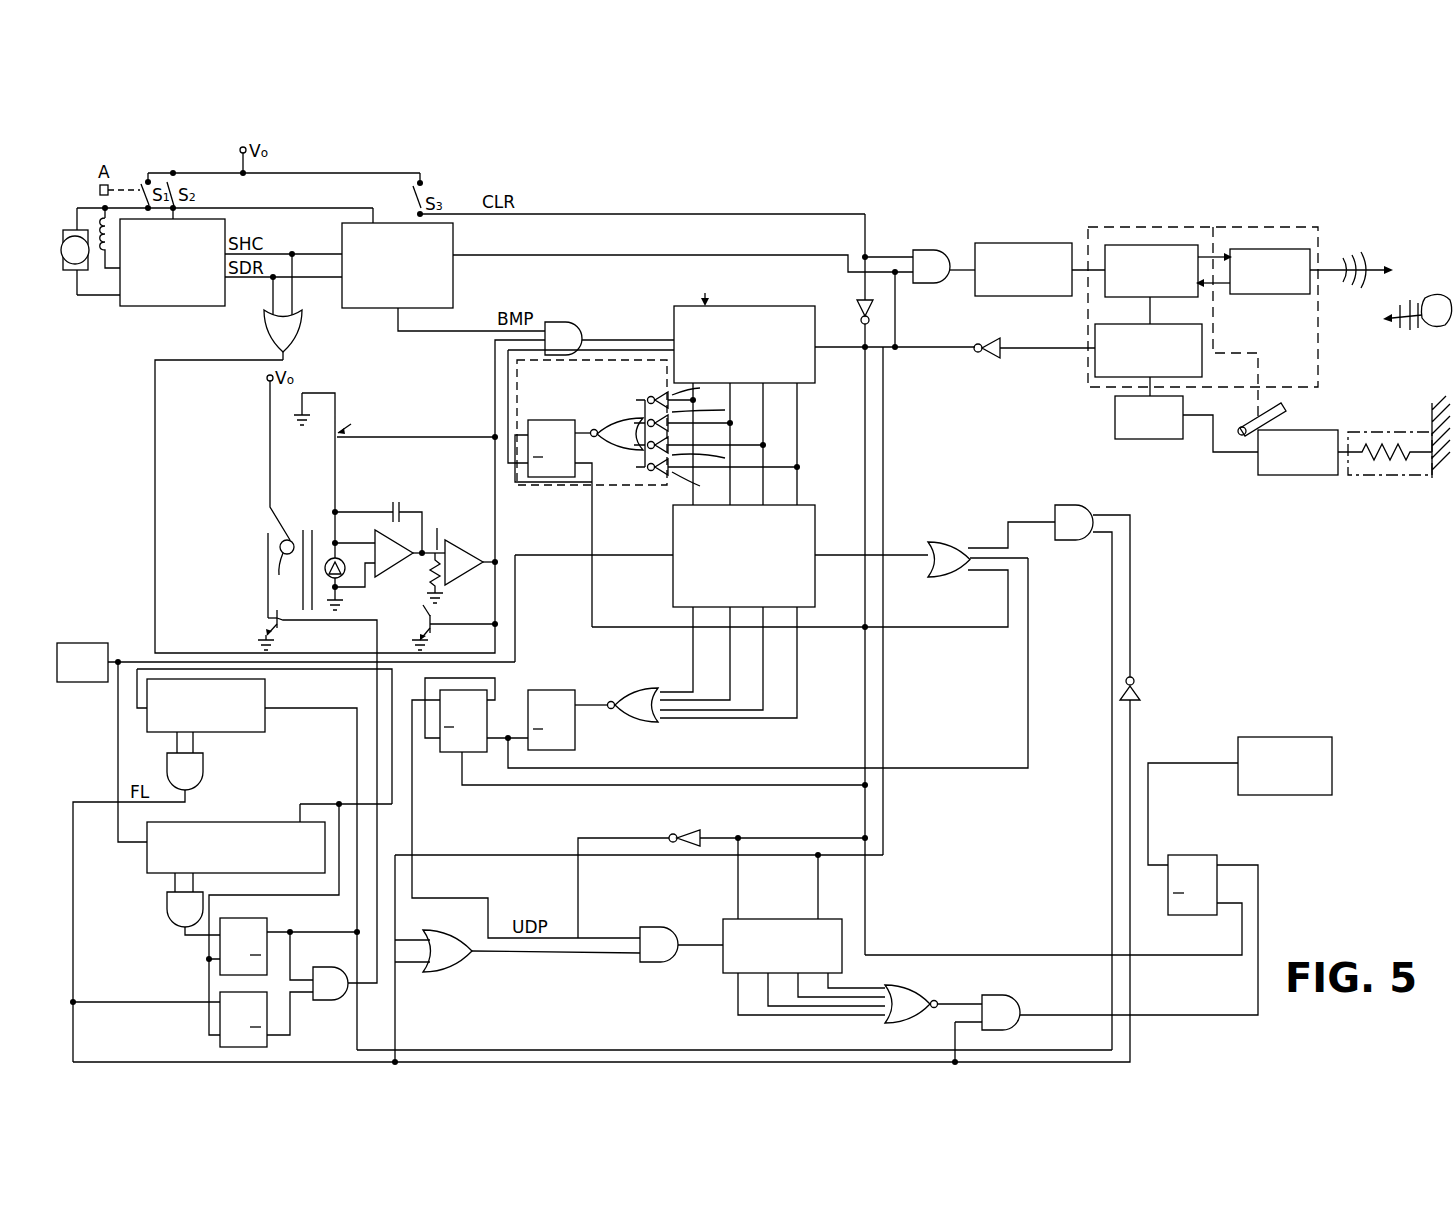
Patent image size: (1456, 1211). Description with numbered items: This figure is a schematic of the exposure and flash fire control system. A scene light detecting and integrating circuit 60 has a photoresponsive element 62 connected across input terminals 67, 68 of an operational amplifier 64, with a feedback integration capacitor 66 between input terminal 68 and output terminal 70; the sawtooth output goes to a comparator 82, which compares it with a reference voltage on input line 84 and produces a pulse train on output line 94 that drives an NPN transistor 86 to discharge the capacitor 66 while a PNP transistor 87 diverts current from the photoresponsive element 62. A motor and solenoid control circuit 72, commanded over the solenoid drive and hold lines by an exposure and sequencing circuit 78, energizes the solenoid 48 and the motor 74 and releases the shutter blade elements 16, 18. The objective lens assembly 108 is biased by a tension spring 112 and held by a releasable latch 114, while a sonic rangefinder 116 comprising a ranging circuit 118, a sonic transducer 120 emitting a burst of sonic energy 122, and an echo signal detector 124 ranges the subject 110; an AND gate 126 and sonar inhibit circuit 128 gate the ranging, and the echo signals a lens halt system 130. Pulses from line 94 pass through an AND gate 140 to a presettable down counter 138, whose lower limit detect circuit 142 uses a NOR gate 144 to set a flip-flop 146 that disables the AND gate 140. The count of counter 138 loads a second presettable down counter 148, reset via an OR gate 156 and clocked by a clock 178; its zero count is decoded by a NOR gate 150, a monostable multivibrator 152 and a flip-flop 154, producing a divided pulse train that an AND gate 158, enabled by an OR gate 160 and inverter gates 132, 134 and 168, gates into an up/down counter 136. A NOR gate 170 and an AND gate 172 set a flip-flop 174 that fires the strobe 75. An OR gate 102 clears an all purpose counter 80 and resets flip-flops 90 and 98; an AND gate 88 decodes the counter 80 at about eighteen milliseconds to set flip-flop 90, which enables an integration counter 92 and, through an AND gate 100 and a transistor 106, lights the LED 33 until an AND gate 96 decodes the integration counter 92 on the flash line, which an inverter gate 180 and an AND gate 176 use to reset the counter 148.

The shutter blade element 16 is at (300, 528).
The shutter blade element 18 is at (316, 530).
The LED 33 is at (287, 570).
The solenoid 48 is at (103, 216).
The scene light detecting and integrating circuit 60 is at (420, 507).
The photoresponsive element 62 is at (346, 589).
The operational amplifier 64 is at (394, 546).
The feedback integration capacitor 66 is at (392, 500).
The input terminal 67 is at (368, 590).
The input terminal 68 is at (366, 540).
The output terminal 70 is at (407, 572).
The motor and solenoid control circuit 72 is at (193, 308).
The motor 74 is at (103, 269).
The strobe 75 is at (1300, 737).
The exposure and sequencing circuit 78 is at (378, 310).
The all purpose counter 80 is at (242, 822).
The comparator 82 is at (447, 550).
The input line 84 is at (443, 594).
The NPN transistor 86 is at (440, 632).
The PNP transistor 87 is at (346, 428).
The AND gate 88 is at (167, 906).
The flip-flop 90 is at (218, 944).
The integration counter 92 is at (250, 733).
The output line 94 is at (486, 560).
The AND gate 96 is at (205, 771).
The flip-flop 98 is at (218, 1022).
The AND gate 100 is at (328, 967).
The OR gate 102 is at (295, 342).
The transistor 106 is at (262, 619).
The objective lens assembly 108 is at (1322, 430).
The photographic subject 110 is at (1428, 298).
The tension spring 112 is at (1365, 478).
The releasable latch 114 is at (1268, 408).
The sonic rangefinder 116 is at (1243, 224).
The ranging circuit 118 is at (1152, 245).
The sonic transducer 120 is at (1280, 249).
The burst of sonic energy 122 is at (1368, 258).
The echo signal detector 124 is at (1095, 360).
The AND gate 126 is at (935, 250).
The sonar inhibit circuit 128 is at (1035, 243).
The lens halt system 130 is at (1115, 428).
The inverter gate 132 is at (857, 308).
The inverter gate 134 is at (700, 834).
The up/down counter 136 is at (785, 918).
The presettable down counter 138 is at (782, 306).
The AND gate 140 is at (575, 323).
The lower limit detect circuit 142 is at (630, 485).
The NOR gate 144 is at (620, 448).
The flip-flop 146 is at (548, 480).
The presettable down counter 148 is at (672, 578).
The NOR gate 150 is at (642, 688).
The monostable multivibrator 152 is at (576, 738).
The flip-flop 154 is at (485, 705).
The OR gate 156 is at (956, 542).
The AND gate 158 is at (653, 927).
The OR gate 160 is at (450, 975).
The inverter gate 168 is at (980, 342).
The NOR gate 170 is at (905, 985).
The AND gate 172 is at (1010, 996).
The flip-flop 174 is at (1215, 856).
The AND gate 176 is at (1080, 505).
The clock 178 is at (90, 643).
The inverter gate 180 is at (1140, 692).